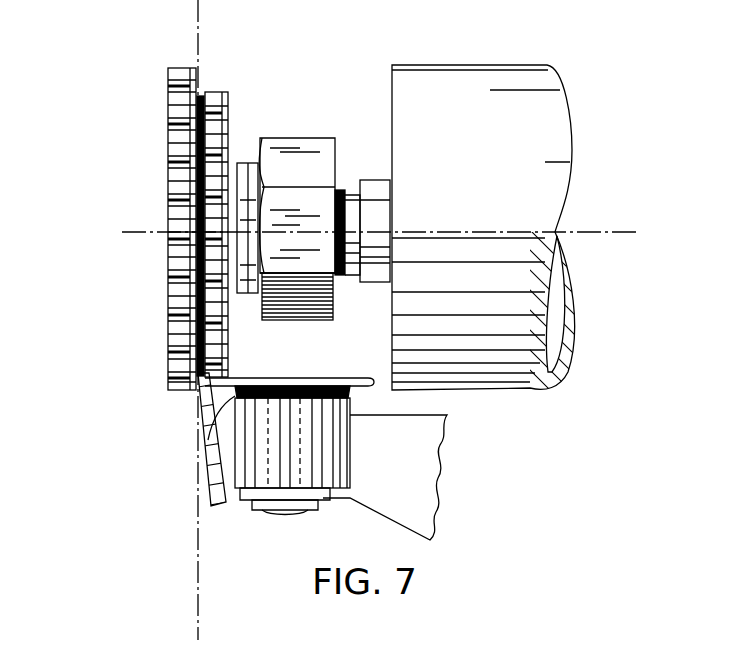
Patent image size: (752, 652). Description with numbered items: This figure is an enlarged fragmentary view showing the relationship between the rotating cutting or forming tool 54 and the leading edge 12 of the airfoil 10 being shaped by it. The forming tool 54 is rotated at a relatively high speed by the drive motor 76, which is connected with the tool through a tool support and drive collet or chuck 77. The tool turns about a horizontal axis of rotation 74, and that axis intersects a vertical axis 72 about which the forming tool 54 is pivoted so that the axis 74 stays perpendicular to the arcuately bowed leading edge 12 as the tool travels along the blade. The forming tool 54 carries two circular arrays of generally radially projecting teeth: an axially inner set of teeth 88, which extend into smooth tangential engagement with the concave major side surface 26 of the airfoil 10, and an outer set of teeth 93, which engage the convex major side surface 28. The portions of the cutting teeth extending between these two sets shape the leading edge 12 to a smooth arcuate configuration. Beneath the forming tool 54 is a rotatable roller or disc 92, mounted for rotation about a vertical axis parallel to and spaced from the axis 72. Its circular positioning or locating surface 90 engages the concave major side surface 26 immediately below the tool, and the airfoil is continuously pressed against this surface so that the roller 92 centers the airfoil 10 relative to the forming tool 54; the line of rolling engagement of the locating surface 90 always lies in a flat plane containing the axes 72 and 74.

The airfoil 10 is at (160, 400).
The leading edge 12 is at (205, 345).
The concave major side surface 26 is at (252, 395).
The convex major side surface 28 is at (198, 470).
The forming tool 54 is at (230, 98).
The vertical axis 72 is at (196, 29).
The horizontal axis of rotation 74 is at (637, 232).
The drive motor 76 is at (560, 92).
The tool support and drive collet or chuck 77 is at (334, 124).
The axially inner set of teeth 88 is at (220, 128).
The circular positioning or locating surface 90 is at (300, 378).
The roller 92 is at (286, 386).
The outer set of teeth 93 is at (178, 150).